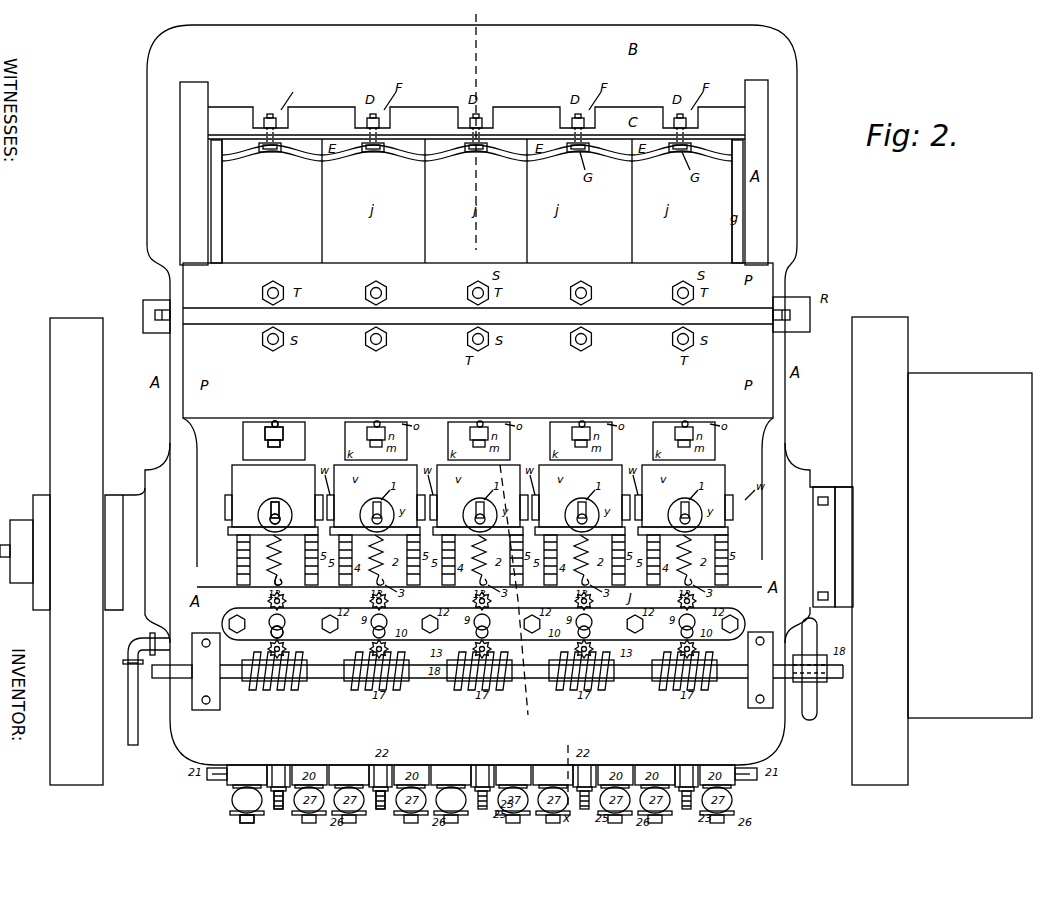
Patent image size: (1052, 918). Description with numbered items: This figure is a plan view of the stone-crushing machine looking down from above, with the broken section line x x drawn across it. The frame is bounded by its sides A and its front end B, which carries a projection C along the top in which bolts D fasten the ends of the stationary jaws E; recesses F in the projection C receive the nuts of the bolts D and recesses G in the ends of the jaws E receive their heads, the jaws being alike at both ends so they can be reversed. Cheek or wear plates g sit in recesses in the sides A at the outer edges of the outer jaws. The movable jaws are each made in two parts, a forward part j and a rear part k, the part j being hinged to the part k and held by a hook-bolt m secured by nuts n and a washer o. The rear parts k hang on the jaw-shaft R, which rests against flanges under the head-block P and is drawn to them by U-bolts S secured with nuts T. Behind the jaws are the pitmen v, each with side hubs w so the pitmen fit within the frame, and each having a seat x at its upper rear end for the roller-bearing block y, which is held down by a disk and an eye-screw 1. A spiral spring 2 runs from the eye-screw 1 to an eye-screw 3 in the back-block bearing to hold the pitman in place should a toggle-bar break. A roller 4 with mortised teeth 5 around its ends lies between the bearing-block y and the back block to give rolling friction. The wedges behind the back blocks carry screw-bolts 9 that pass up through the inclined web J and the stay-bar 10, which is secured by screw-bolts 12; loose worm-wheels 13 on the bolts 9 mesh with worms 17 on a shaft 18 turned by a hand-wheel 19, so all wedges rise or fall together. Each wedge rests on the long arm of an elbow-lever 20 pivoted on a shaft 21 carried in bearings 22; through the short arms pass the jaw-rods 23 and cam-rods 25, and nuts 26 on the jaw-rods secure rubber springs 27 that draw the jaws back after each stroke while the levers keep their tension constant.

The sides of the frame A is at (479, 422).
The front end of the frame B is at (472, 153).
The projection C is at (476, 123).
The bolt D is at (270, 122).
The stationary jaw E is at (477, 151).
The recess F is at (290, 95).
The recess G is at (375, 152).
The inclined web J is at (483, 615).
The head-block P is at (478, 340).
The jaw-shaft R is at (147, 315).
The U-bolt S is at (282, 287).
The nut T is at (273, 347).
The cheek or wear plate g is at (212, 201).
The forward part of the movable jaw j is at (272, 201).
The rear part of the movable jaw k is at (274, 441).
The hook-bolt m is at (281, 447).
The nut n is at (279, 435).
The washer o is at (300, 424).
The pitman v is at (273, 500).
The hub or projection w is at (225, 500).
The seat x is at (519, 405).
The roller-bearing block y is at (287, 514).
The eye-screw 1 is at (279, 500).
The spiral spring 2 is at (282, 560).
The eye-screw 3 is at (283, 585).
The roller 4 is at (285, 560).
The mortised teeth 5 is at (238, 560).
The screw-bolt 9 is at (272, 626).
The stay-bar 10 is at (264, 632).
The screw-bolt 12 is at (243, 620).
The worm-wheel 13 is at (286, 651).
The worm 17 is at (274, 677).
The shaft 18 is at (172, 671).
The hand-wheel 19 is at (819, 669).
The elbow-lever 20 is at (247, 775).
The shaft 21 is at (144, 689).
The bearing 22 is at (278, 778).
The jaw-rod 23 is at (283, 805).
The cam-rod 25 is at (385, 805).
The nut 26 is at (254, 820).
The spring 27 is at (247, 804).